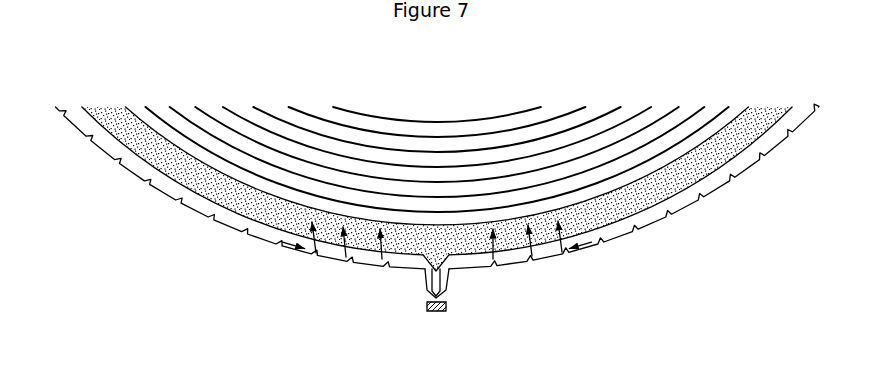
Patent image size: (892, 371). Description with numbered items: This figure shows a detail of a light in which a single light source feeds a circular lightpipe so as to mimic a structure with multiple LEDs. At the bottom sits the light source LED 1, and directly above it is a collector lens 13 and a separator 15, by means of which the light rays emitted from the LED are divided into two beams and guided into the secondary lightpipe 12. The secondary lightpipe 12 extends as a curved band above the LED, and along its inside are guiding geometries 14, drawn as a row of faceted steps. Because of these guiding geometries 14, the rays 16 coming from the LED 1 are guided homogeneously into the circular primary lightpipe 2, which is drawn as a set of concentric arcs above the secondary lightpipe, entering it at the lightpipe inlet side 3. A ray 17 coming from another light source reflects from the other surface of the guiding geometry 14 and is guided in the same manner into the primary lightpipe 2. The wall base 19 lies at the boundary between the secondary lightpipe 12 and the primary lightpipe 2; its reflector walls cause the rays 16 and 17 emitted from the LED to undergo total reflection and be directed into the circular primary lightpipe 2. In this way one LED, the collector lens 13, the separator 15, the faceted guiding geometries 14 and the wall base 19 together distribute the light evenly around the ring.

The light source LED 1 is at (453, 306).
The primary lightpipe 2 is at (245, 110).
The lightpipe inlet side 3 is at (208, 172).
The secondary lightpipe 12 is at (682, 207).
The collector lens 13 is at (422, 279).
The guiding geometries 14 is at (240, 231).
The separator 15 is at (425, 256).
The rays 16 is at (532, 249).
The ray 17 is at (591, 242).
The wall base 19 is at (107, 107).